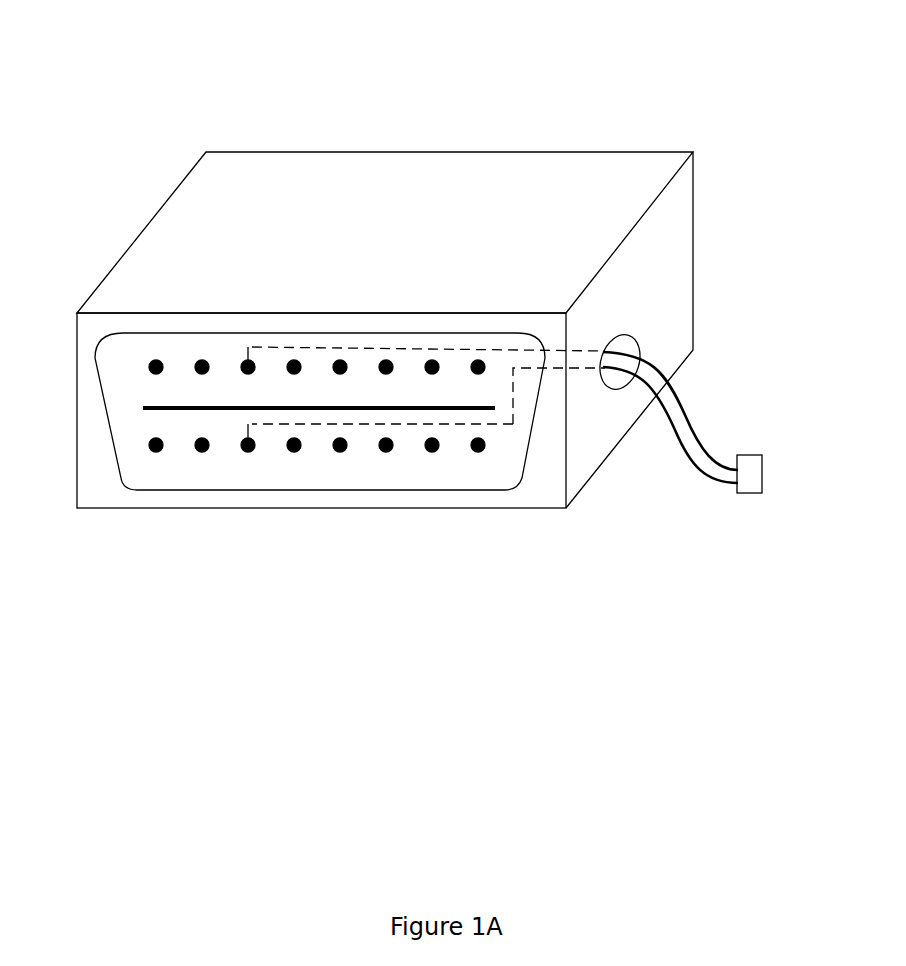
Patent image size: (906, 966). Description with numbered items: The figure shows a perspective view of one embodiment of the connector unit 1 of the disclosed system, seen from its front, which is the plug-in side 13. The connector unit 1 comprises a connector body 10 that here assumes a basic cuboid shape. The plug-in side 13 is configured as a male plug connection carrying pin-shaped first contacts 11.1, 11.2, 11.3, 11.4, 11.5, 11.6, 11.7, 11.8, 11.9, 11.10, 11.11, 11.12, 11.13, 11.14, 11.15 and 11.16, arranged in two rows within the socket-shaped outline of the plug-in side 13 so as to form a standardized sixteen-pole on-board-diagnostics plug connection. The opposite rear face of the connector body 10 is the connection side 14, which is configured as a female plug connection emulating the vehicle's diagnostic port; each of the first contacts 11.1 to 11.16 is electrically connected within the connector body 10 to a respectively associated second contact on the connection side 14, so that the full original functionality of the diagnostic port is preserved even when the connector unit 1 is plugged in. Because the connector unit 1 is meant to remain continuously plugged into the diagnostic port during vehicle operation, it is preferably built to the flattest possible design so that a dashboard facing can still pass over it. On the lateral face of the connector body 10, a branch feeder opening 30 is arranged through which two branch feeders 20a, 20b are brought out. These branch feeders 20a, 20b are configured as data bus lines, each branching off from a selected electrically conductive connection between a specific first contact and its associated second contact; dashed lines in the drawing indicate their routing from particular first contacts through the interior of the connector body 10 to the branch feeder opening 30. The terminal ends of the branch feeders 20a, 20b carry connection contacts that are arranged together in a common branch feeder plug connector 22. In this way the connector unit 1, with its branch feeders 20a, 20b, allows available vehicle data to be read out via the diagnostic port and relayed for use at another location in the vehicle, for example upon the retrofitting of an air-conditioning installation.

The connector unit 1 is at (156, 80).
The connector body 10 is at (556, 188).
The connection side 14 is at (388, 132).
The plug-in side 13 is at (538, 452).
The first contact 11.1 is at (478, 360).
The first contact 11.2 is at (432, 360).
The first contact 11.3 is at (386, 360).
The first contact 11.4 is at (340, 360).
The first contact 11.5 is at (294, 360).
The first contact 11.6 is at (248, 360).
The first contact 11.7 is at (202, 360).
The first contact 11.8 is at (156, 360).
The first contact 11.9 is at (485, 449).
The first contact 11.10 is at (432, 452).
The first contact 11.11 is at (386, 452).
The first contact 11.12 is at (340, 452).
The first contact 11.13 is at (294, 452).
The first contact 11.14 is at (248, 452).
The first contact 11.15 is at (202, 452).
The first contact 11.16 is at (156, 452).
The branch feeder opening 30 is at (632, 330).
The branch feeder 20a is at (705, 415).
The branch feeder 20b is at (680, 430).
The branch feeder plug connector 22 is at (748, 493).